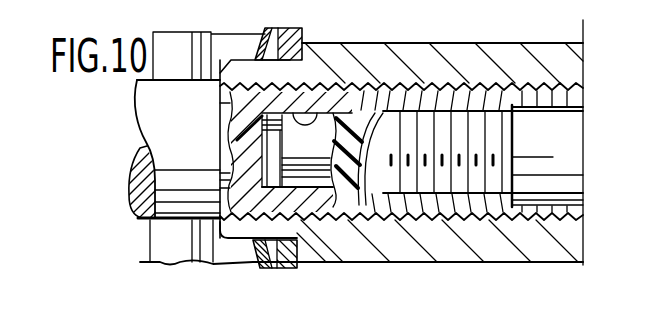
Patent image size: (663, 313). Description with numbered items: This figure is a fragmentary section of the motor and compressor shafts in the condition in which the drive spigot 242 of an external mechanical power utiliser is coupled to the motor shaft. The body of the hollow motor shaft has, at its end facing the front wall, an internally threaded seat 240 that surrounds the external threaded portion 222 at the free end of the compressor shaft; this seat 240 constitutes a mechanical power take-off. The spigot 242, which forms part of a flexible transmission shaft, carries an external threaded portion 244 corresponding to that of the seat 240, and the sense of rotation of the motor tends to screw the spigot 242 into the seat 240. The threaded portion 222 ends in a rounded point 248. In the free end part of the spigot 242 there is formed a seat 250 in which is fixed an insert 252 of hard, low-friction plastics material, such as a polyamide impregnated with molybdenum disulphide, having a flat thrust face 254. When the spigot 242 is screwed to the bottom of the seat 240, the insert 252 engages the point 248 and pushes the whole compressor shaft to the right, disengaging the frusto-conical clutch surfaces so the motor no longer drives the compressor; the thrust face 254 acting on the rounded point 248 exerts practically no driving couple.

The external threaded portion 222 is at (441, 150).
The internally threaded seat 240 is at (505, 86).
The drive spigot 242 is at (166, 223).
The external threaded portion 244 is at (265, 217).
The rounded point 248 is at (349, 196).
The cylindrical extension 250 is at (300, 114).
The insert 252 is at (305, 112).
The flat thrust face 254 is at (378, 95).